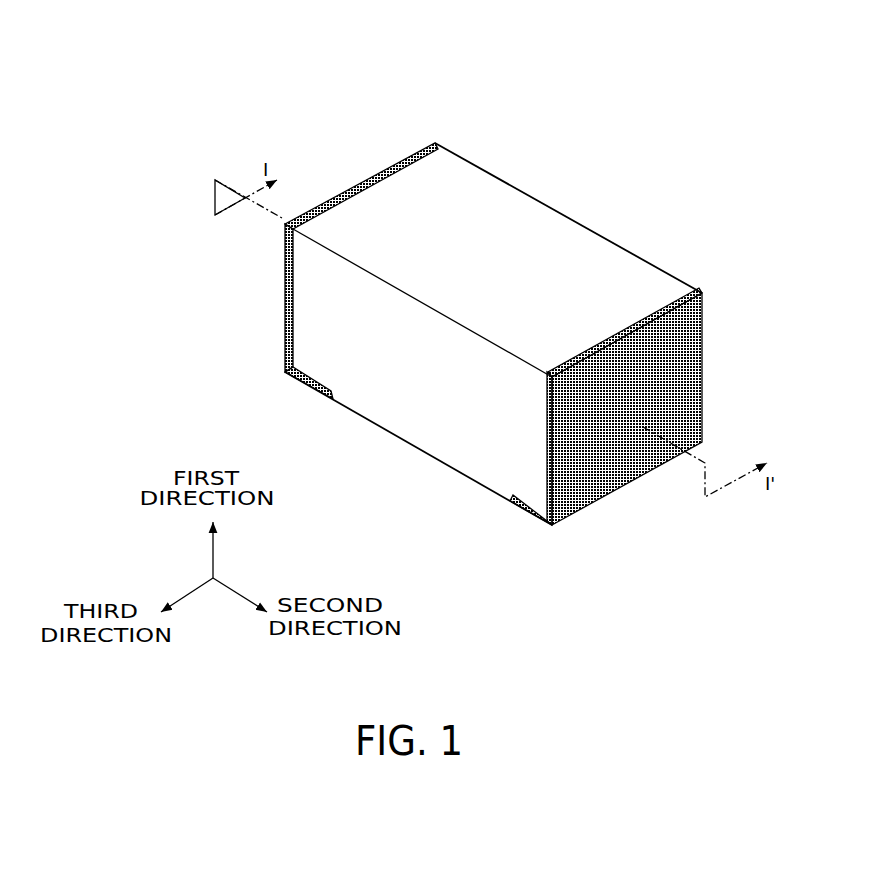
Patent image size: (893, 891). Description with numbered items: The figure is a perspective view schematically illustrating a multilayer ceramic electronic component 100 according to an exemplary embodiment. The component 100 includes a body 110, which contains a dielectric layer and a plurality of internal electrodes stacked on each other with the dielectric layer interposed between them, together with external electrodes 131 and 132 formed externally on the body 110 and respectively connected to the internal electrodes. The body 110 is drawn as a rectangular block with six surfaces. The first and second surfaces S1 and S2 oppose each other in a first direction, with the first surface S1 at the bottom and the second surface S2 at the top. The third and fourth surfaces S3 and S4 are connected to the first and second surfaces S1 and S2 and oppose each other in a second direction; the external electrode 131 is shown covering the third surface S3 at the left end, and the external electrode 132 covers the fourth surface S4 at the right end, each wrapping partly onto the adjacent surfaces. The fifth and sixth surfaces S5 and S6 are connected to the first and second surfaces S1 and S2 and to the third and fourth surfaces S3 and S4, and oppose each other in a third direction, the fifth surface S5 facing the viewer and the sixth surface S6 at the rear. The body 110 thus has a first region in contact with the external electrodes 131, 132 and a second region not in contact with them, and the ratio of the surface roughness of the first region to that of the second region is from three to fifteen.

The multilayer ceramic electronic component 100 is at (196, 41).
The body 110 is at (478, 208).
The external electrode 131 is at (435, 142).
The external electrode 132 is at (702, 293).
The first surface S1 is at (384, 431).
The second surface S2 is at (531, 264).
The third surface S3 is at (377, 169).
The fourth surface S4 is at (672, 362).
The fifth surface S5 is at (488, 426).
The sixth surface S6 is at (609, 234).